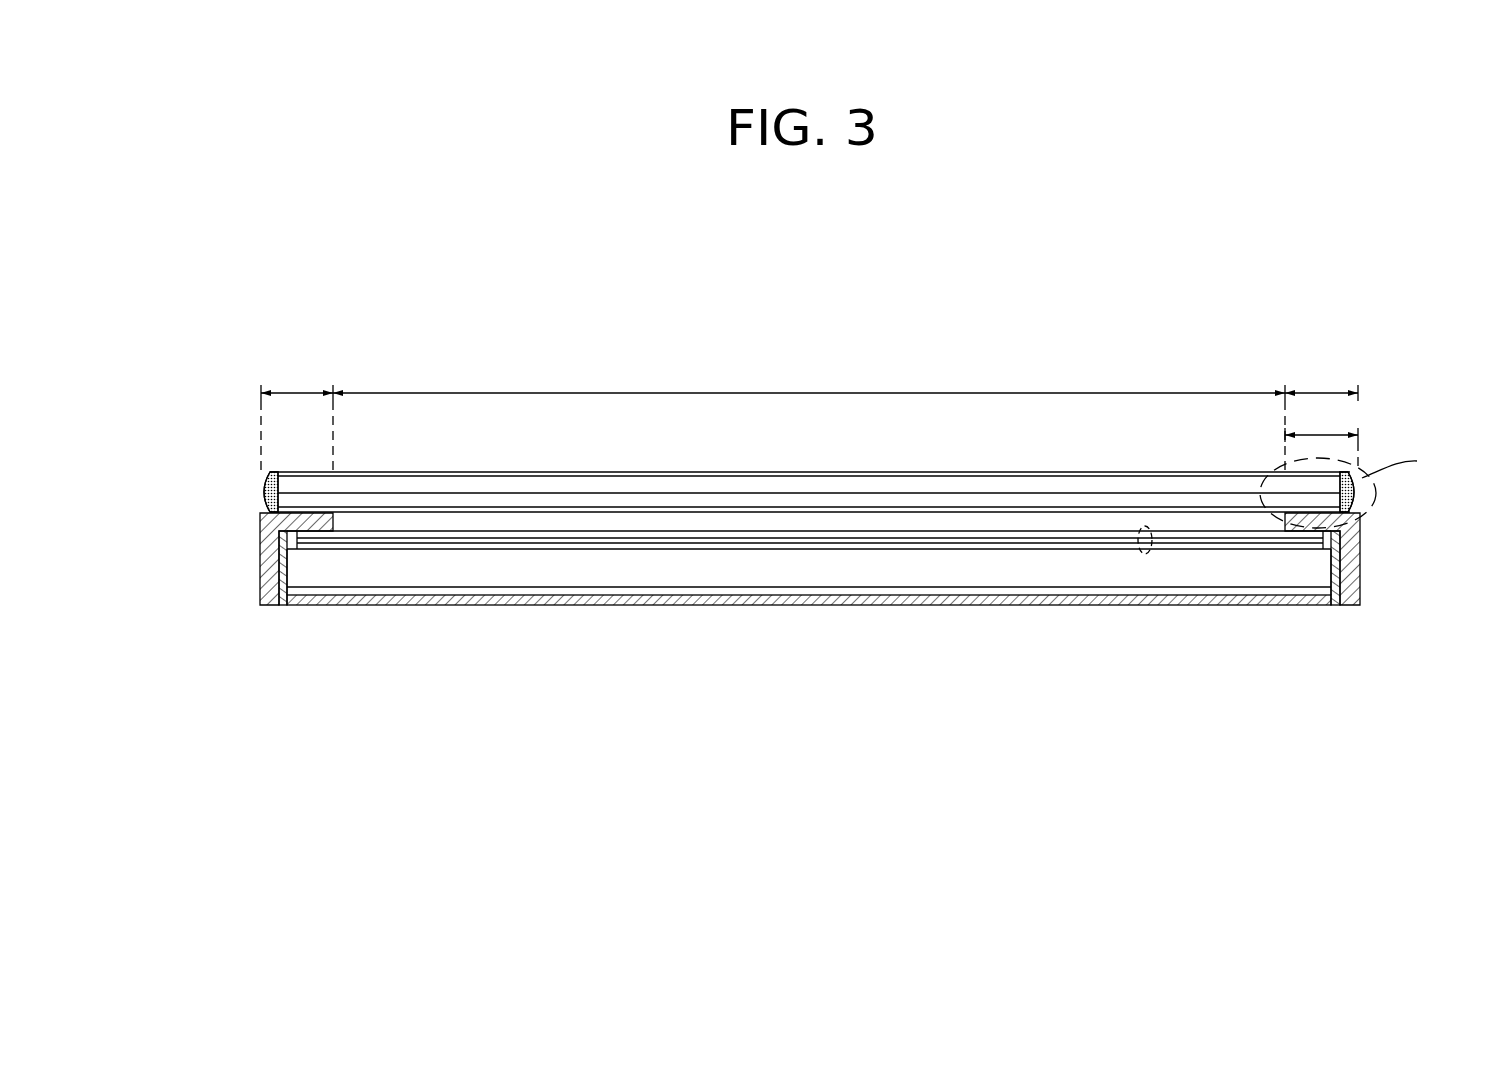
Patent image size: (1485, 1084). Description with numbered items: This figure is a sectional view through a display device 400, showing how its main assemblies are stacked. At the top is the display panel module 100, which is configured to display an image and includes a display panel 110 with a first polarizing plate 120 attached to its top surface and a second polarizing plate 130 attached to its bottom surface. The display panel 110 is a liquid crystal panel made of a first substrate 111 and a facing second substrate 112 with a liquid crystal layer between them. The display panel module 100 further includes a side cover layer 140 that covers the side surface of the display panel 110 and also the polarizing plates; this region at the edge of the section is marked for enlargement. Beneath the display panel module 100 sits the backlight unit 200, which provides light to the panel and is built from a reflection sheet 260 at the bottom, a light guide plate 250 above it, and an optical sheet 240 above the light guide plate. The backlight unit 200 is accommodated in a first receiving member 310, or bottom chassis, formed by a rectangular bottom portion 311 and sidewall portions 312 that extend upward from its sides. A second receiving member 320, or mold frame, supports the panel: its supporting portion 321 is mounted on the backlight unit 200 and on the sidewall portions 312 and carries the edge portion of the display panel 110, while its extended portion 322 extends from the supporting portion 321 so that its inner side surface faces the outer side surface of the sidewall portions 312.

The display device 400 is at (1250, 318).
The display panel module 100 is at (632, 726).
The display panel 110 is at (697, 679).
The first substrate 111 is at (718, 504).
The second substrate 112 is at (788, 488).
The first polarizing plate 120 is at (849, 474).
The second polarizing plate 130 is at (653, 513).
The side cover layer 140 is at (1360, 497).
The backlight unit 200 is at (1003, 678).
The optical sheet 240 is at (1136, 556).
The light guide plate 250 is at (1085, 576).
The reflection sheet 260 is at (1023, 591).
The first receiving member 310 is at (398, 678).
The bottom portion 311 is at (380, 599).
The sidewall portions 312 is at (289, 573).
The second receiving member 320 is at (172, 530).
The supporting portion 321 is at (298, 546).
The extended portion 322 is at (268, 578).